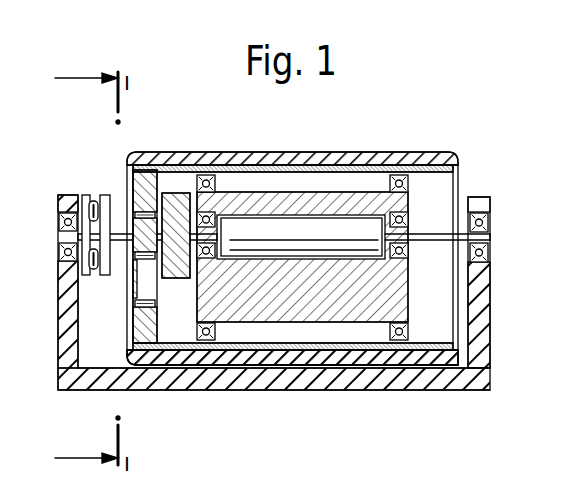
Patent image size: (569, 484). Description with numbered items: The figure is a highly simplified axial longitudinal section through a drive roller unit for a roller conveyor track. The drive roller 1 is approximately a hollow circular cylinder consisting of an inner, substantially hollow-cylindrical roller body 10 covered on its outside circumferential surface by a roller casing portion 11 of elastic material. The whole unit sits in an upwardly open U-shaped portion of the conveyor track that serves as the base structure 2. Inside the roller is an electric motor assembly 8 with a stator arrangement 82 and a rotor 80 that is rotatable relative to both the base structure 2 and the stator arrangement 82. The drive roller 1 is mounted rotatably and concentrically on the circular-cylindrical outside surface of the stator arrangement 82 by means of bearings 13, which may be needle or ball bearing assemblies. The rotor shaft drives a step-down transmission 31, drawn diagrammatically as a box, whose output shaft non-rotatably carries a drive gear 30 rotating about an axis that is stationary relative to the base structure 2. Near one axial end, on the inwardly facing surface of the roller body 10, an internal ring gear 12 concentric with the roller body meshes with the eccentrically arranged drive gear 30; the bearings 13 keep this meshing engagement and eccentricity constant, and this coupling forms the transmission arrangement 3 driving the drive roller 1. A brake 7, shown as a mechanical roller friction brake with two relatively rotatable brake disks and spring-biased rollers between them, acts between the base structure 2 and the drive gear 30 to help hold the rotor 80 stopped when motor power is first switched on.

The drive roller 1 is at (371, 148).
The base structure 2 is at (482, 312).
The transmission arrangement 3 is at (128, 205).
The brake 7 is at (84, 182).
The electric motor assembly 8 is at (414, 280).
The roller body 10 is at (337, 354).
The roller casing portion 11 is at (290, 357).
The internal ring gear 12 is at (140, 306).
The bearings 13 is at (208, 176).
The drive gear 30 is at (142, 262).
The step-down transmission 31 is at (175, 193).
The rotor 80 is at (308, 228).
The stator arrangement 82 is at (409, 212).